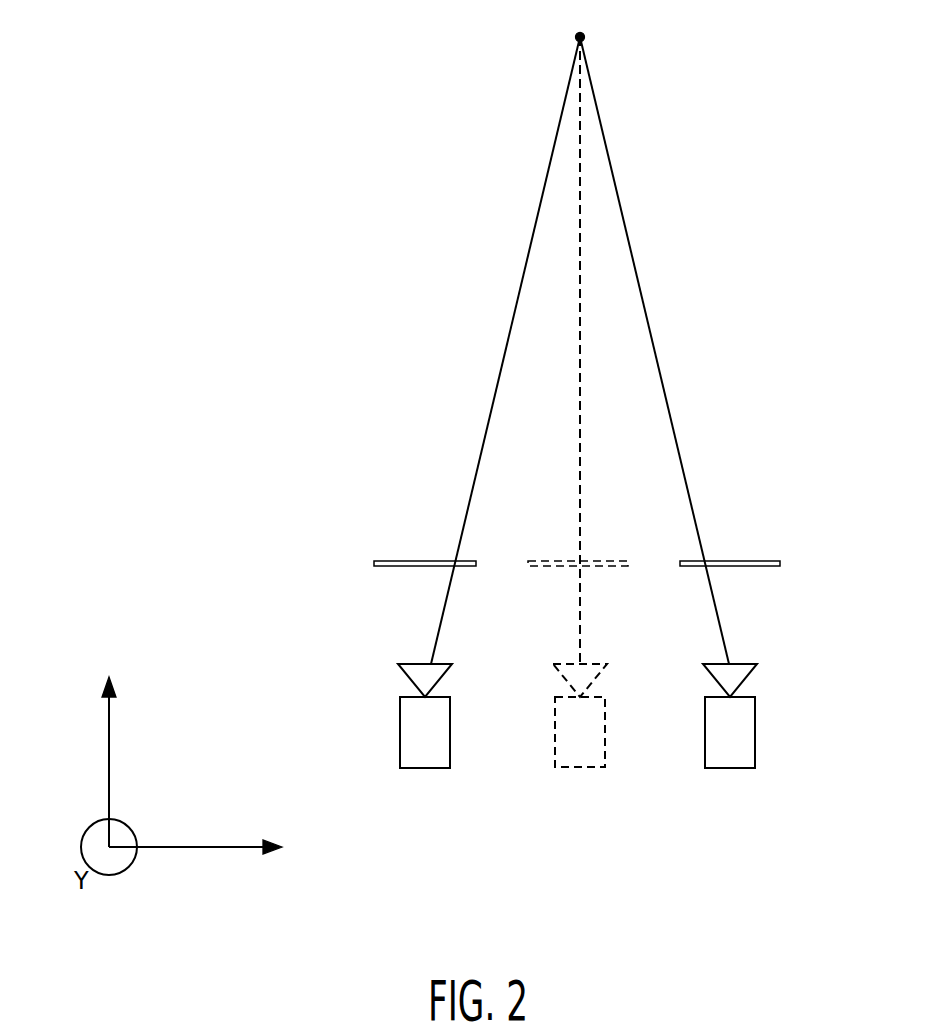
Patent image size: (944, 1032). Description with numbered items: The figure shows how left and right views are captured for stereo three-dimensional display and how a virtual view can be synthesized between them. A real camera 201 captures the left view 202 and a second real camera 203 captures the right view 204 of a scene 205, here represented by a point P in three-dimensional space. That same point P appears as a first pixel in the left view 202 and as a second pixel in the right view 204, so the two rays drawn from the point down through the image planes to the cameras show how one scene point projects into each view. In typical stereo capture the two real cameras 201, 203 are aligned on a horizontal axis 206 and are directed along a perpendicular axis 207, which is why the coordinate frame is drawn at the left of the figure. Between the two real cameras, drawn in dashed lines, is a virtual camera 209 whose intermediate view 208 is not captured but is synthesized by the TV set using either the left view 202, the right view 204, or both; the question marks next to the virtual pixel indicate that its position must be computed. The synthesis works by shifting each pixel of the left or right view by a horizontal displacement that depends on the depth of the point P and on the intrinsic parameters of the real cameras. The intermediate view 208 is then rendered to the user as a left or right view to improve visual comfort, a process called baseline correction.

The real camera 201 is at (405, 718).
The left view 202 is at (392, 561).
The real camera 203 is at (750, 723).
The right view 204 is at (768, 561).
The scene 205 is at (577, 37).
The horizontal axis 206 is at (222, 847).
The perpendicular axis 207 is at (109, 727).
The intermediate view 208 is at (547, 561).
The virtual camera 209 is at (605, 725).